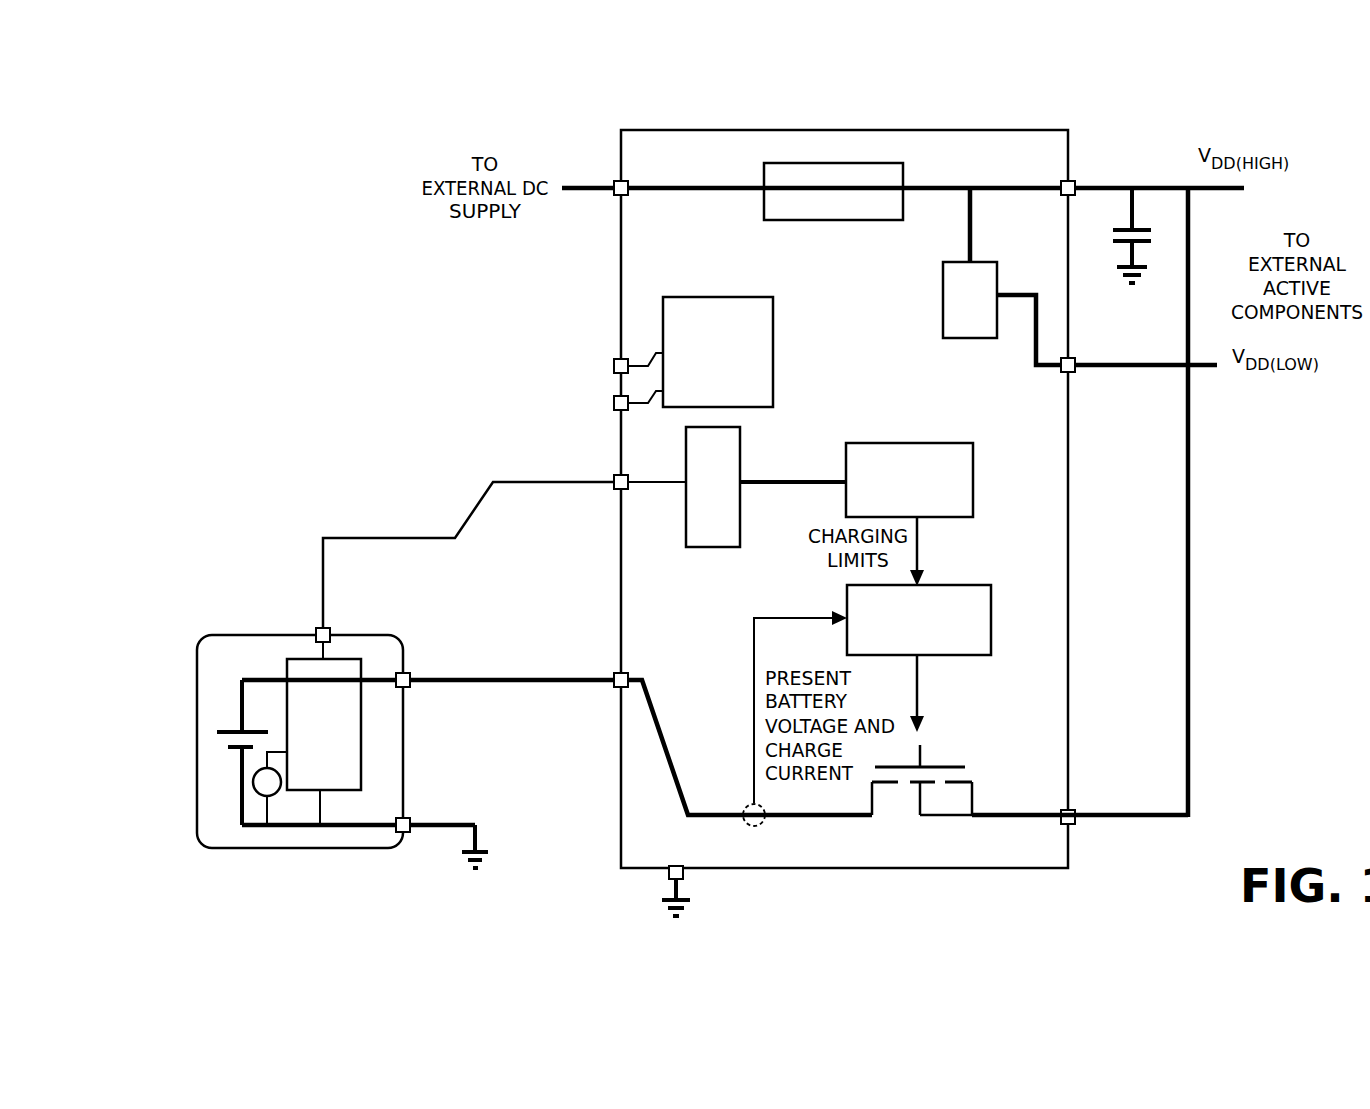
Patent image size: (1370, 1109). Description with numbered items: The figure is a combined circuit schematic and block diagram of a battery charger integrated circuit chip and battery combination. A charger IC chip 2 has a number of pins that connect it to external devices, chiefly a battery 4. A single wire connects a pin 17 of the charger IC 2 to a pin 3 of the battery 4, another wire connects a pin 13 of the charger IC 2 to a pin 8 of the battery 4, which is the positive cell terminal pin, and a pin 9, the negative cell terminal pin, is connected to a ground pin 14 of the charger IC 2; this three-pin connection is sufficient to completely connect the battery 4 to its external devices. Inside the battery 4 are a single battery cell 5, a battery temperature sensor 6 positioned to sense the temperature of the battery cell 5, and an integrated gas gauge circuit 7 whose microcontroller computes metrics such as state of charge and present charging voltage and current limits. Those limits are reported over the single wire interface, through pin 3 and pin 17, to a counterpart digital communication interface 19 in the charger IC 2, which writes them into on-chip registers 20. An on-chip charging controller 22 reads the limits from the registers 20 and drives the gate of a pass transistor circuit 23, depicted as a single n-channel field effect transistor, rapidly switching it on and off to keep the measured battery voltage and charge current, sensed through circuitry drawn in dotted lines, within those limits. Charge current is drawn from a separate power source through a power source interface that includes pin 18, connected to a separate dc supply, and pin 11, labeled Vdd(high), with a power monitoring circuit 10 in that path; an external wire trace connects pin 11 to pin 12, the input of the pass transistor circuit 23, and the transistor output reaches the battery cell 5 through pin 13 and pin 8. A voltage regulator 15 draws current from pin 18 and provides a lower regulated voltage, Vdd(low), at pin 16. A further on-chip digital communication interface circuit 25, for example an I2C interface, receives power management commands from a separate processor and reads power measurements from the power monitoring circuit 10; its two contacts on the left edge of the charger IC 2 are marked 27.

The charger IC chip 2 is at (1028, 868).
The pin 3 is at (318, 629).
The battery 4 is at (380, 636).
The battery cell 5 is at (222, 742).
The battery temperature sensor 6 is at (255, 792).
The gas gauge circuit 7 is at (324, 742).
The positive cell terminal pin 8 is at (410, 688).
The negative cell terminal pin 9 is at (410, 818).
The power monitoring circuit 10 is at (752, 222).
The pin 11 is at (1078, 180).
The pin 12 is at (1078, 805).
The pin 13 is at (613, 690).
The ground pin 14 is at (690, 880).
The voltage regulator 15 is at (1005, 276).
The pin 16 is at (1078, 373).
The pin 17 is at (613, 487).
The pin 18 is at (612, 196).
The digital communication interface 19 is at (690, 580).
The registers 20 is at (909, 480).
The charging controller 22 is at (919, 620).
The pass transistor circuit 23 is at (973, 773).
The digital communication interface circuit 25 is at (718, 352).
The communication interface pins 27 is at (613, 360).